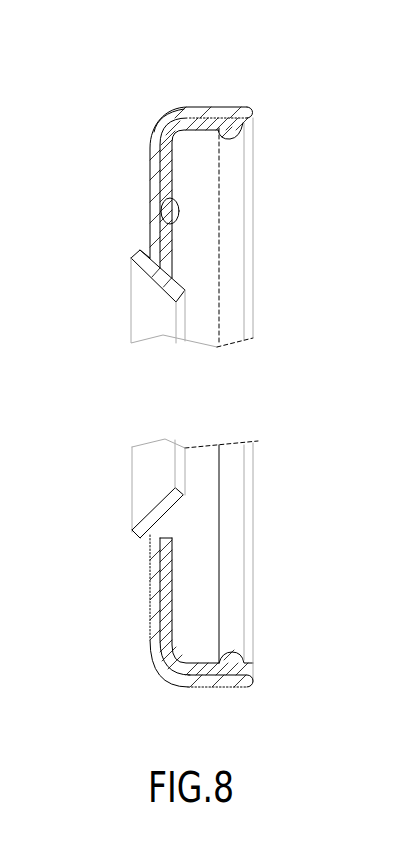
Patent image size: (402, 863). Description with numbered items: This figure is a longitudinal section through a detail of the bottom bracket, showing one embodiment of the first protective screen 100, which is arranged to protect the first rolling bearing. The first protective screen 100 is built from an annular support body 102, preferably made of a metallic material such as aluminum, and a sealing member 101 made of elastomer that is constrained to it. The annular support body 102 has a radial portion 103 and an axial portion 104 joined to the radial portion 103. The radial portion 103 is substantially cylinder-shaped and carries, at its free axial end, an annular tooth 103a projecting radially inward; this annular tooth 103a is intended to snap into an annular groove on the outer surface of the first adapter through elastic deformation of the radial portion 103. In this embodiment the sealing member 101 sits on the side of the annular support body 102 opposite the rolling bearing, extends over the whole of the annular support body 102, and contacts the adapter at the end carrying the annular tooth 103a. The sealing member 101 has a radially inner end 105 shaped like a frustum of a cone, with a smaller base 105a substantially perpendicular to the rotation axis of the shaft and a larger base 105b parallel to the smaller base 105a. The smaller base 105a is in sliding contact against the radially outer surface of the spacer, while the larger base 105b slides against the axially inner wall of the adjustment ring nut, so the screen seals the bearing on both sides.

The first protective screen 100 is at (288, 119).
The sealing member 101 is at (142, 301).
The annular support body 102 is at (147, 657).
The radial portion 103 is at (158, 130).
The annular tooth 103a is at (226, 121).
The axial portion 104 is at (167, 227).
The radially inner end 105 is at (145, 510).
The smaller base 105a is at (182, 467).
The larger base 105b is at (142, 528).